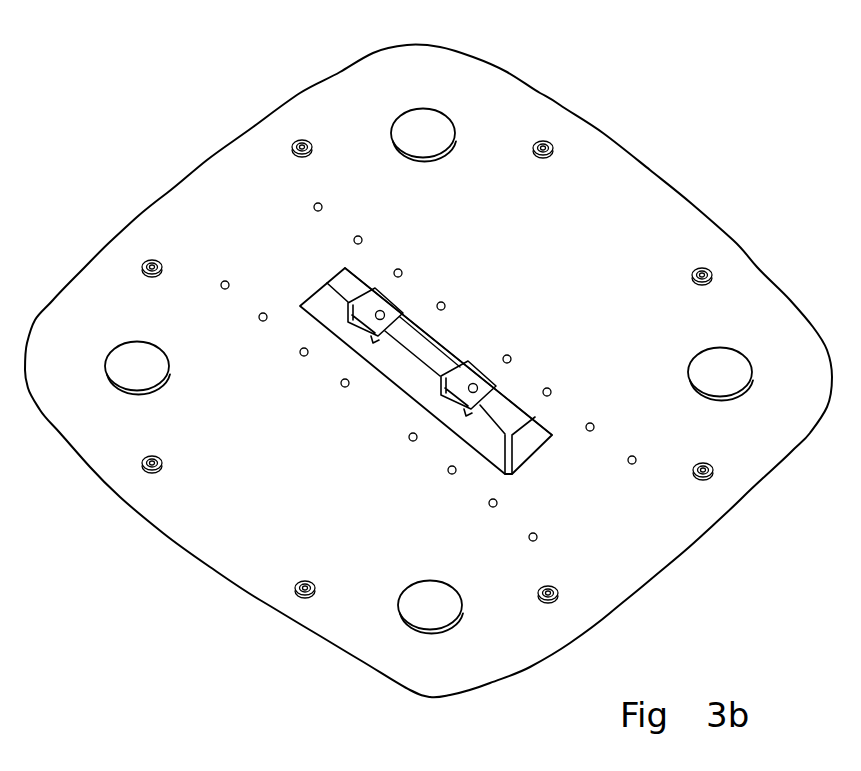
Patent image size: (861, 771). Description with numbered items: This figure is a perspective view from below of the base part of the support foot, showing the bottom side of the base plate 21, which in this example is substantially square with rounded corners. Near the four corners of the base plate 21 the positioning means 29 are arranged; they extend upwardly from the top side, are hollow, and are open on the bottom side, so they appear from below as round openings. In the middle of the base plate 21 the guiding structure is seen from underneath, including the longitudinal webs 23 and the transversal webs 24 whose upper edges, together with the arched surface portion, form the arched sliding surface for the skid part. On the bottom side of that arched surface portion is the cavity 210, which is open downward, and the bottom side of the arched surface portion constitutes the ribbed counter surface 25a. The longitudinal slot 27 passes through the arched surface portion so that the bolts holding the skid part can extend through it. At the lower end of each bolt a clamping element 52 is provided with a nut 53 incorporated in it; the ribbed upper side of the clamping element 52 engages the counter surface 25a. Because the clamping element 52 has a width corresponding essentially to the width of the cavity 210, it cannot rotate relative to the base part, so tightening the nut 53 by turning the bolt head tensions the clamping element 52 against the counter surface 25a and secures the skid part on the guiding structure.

The base plate 21 is at (428, 371).
The positioning means 29 is at (427, 135).
The longitudinal webs 23 is at (412, 389).
The cavity 210 is at (397, 367).
The counter surface 25a is at (422, 352).
The transversal webs 24 is at (527, 446).
The longitudinal slot 27 is at (502, 408).
The clamping element 52 is at (362, 300).
The nut 53 is at (388, 310).